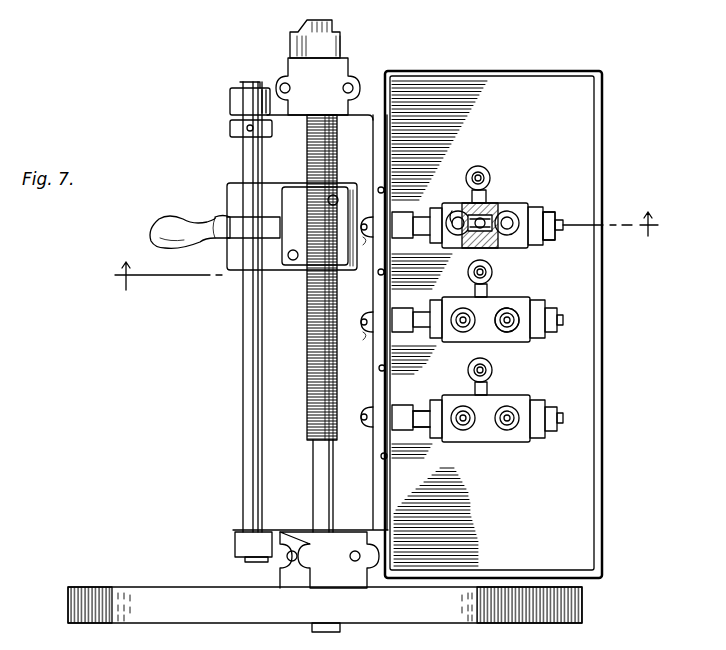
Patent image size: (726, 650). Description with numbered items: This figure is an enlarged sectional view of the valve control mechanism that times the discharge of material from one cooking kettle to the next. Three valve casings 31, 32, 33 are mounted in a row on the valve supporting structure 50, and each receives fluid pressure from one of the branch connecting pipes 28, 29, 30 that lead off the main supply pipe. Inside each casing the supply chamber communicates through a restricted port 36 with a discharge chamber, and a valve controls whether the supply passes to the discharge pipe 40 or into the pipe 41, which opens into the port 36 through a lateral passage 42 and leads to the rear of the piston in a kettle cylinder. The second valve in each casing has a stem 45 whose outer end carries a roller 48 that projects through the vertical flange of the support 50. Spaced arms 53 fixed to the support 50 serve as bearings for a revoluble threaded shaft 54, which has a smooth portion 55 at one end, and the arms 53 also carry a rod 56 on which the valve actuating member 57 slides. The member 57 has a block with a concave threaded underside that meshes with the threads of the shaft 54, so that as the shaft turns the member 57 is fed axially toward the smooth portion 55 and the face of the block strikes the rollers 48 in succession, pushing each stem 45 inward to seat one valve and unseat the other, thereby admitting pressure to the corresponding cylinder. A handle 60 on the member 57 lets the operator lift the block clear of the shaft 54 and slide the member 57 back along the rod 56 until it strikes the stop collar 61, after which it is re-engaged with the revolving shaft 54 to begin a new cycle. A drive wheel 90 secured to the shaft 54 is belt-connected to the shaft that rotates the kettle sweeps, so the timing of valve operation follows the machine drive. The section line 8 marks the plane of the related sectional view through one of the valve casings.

The section line 8- 8 is at (383, 251).
The branch connecting pipe 28 is at (562, 210).
The branch connecting pipe 29 is at (514, 328).
The branch connecting pipe 30 is at (509, 428).
The valve casing 31 is at (516, 212).
The valve casing 32 is at (520, 300).
The valve casing 33 is at (515, 400).
The restricted port 36 is at (456, 212).
The discharge pipe 40 is at (462, 328).
The pipe 41 is at (480, 172).
The lateral passage 42 is at (488, 206).
The valve stem 45 is at (422, 406).
The roller 48 is at (370, 390).
The valve supporting structure 50 is at (601, 506).
The spaced arms 53 is at (363, 72).
The threaded shaft 54 is at (316, 380).
The smooth portion 55 is at (316, 488).
The rod 56 is at (243, 336).
The valve actuating member 57 is at (292, 226).
The handle 60 is at (156, 222).
The stop collar 61 is at (232, 127).
The drive wheel 90 is at (92, 596).